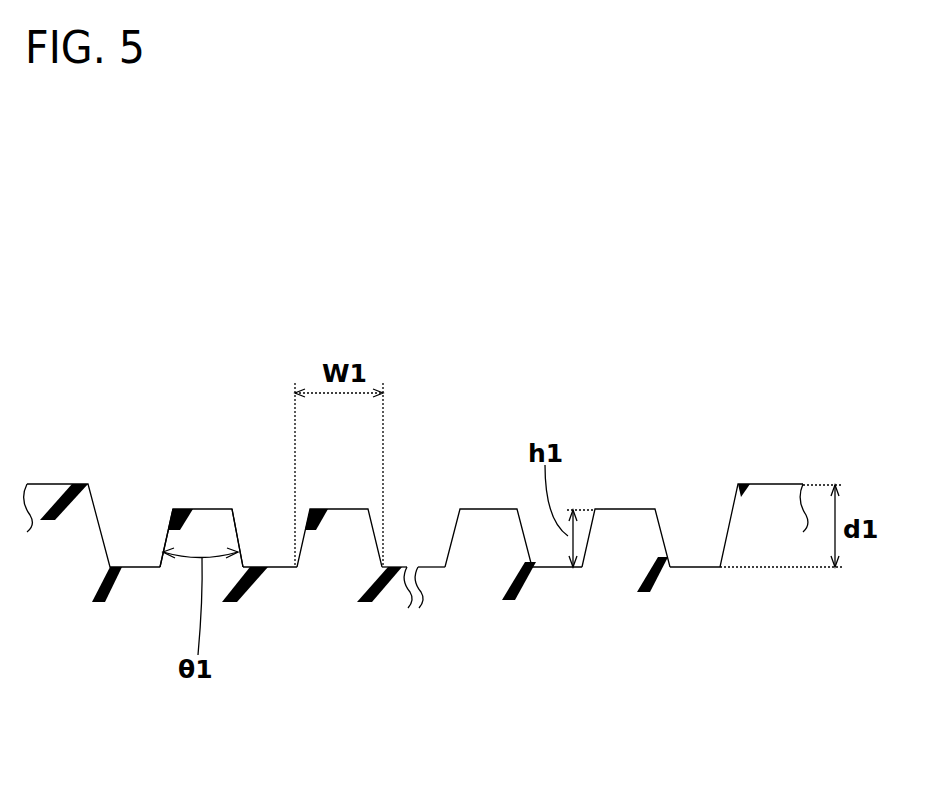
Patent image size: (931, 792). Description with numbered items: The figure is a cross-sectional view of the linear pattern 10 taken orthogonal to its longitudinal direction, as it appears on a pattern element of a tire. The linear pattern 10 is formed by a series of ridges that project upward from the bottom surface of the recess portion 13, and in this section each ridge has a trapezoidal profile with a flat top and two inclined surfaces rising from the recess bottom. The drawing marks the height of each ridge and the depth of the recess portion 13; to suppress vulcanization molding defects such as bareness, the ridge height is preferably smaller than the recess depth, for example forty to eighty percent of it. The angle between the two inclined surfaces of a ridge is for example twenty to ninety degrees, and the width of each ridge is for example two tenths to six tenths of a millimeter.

The linear pattern 10 is at (416, 531).
The recess portion 13 is at (693, 547).